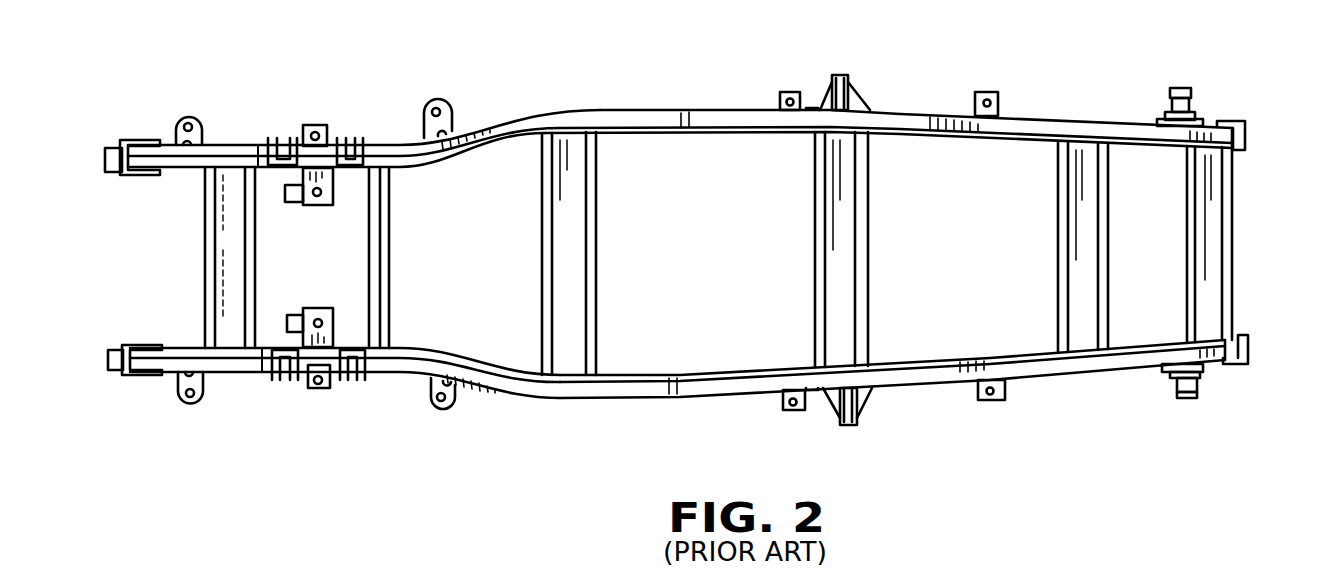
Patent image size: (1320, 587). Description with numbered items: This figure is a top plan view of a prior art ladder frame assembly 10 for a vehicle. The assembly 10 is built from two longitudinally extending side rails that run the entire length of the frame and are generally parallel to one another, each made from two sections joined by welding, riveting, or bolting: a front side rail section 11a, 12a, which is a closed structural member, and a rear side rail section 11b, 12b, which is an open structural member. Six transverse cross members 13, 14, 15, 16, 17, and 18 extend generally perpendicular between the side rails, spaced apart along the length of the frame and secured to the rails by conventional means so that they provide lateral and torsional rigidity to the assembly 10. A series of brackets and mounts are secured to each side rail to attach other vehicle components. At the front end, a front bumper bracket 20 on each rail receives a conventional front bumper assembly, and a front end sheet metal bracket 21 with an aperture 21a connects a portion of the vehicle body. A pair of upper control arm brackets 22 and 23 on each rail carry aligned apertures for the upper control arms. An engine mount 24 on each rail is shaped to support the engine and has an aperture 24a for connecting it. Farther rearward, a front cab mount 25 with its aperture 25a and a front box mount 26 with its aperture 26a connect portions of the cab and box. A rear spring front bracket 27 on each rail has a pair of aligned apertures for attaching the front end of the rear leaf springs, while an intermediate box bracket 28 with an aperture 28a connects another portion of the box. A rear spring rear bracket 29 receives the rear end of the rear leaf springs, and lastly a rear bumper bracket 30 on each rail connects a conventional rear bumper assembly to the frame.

The prior art ladder frame assembly 10 is at (700, 257).
The front side rail section 11a is at (190, 167).
The rear side rail section 11b is at (673, 120).
The front side rail section 12a is at (192, 348).
The rear side rail section 12b is at (673, 397).
The cross member 13 is at (223, 230).
The cross member 14 is at (389, 258).
The cross member 15 is at (587, 260).
The cross member 16 is at (855, 250).
The cross member 17 is at (1100, 238).
The cross member 18 is at (1225, 230).
The front bumper bracket 20 is at (125, 145).
The front end sheet metal bracket 21 is at (199, 273).
The aperture 21a is at (201, 127).
The upper control arm bracket 22 is at (292, 138).
The upper control arm bracket 23 is at (357, 138).
The engine mount 24 is at (319, 257).
The aperture 24a is at (318, 196).
The front cab mount 25 is at (465, 262).
The aperture 25a is at (450, 112).
The front box mount 26 is at (776, 258).
The aperture 26a is at (791, 98).
The rear spring front bracket 27 is at (850, 83).
The intermediate box bracket 28 is at (1001, 254).
The aperture 28a is at (986, 99).
The rear spring rear bracket 29 is at (1178, 88).
The rear bumper bracket 30 is at (1236, 122).